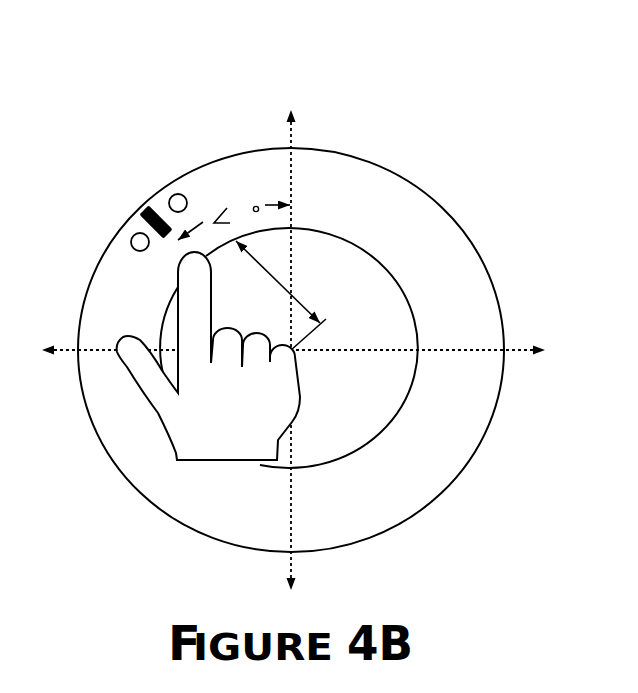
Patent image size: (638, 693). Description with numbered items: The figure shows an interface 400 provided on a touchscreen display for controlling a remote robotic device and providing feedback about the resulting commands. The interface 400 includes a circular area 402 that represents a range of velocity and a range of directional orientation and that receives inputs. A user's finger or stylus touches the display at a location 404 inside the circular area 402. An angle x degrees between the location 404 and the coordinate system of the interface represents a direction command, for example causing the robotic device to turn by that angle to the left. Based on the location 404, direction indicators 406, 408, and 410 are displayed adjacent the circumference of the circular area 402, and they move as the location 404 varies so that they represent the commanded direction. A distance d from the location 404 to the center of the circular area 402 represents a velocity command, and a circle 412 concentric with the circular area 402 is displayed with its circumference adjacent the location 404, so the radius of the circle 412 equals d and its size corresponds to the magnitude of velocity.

The interface 400 is at (170, 80).
The circular area 402 is at (425, 191).
The location 404 is at (197, 272).
The direction indicator 406 is at (132, 236).
The direction indicator 408 is at (145, 207).
The direction indicator 410 is at (173, 193).
The circle 412 is at (385, 267).